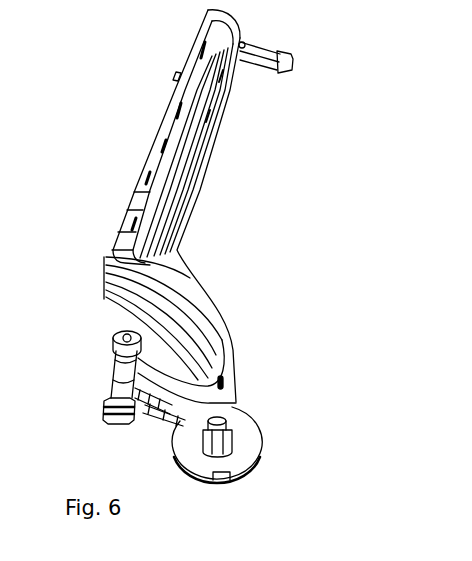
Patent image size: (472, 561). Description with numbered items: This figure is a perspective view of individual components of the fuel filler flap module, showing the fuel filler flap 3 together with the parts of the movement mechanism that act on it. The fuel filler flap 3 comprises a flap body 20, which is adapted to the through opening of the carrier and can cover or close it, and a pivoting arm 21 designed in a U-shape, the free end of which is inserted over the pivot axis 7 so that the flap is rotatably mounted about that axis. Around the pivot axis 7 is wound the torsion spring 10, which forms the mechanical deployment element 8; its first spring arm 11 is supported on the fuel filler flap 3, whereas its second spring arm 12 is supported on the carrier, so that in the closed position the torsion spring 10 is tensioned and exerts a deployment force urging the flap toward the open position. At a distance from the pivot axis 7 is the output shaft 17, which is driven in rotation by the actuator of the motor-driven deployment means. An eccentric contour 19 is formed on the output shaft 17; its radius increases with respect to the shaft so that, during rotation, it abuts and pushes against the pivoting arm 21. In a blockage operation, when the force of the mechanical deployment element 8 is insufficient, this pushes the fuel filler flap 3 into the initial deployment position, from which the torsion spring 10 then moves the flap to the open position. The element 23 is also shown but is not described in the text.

The fuel filler flap 3 is at (150, 122).
The pivot axis 7 is at (112, 340).
The mechanical deployment element 8 is at (98, 418).
The torsion spring 10 is at (117, 425).
The first spring arm 11 is at (136, 418).
The second spring arm 12 is at (137, 413).
The output shaft 17 is at (227, 421).
The eccentric contour 19 is at (234, 438).
The flap body 20 is at (197, 167).
The pivoting arm 21 is at (233, 332).
The base disc 23 is at (245, 477).